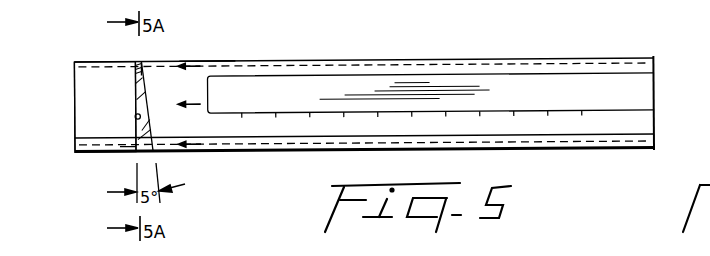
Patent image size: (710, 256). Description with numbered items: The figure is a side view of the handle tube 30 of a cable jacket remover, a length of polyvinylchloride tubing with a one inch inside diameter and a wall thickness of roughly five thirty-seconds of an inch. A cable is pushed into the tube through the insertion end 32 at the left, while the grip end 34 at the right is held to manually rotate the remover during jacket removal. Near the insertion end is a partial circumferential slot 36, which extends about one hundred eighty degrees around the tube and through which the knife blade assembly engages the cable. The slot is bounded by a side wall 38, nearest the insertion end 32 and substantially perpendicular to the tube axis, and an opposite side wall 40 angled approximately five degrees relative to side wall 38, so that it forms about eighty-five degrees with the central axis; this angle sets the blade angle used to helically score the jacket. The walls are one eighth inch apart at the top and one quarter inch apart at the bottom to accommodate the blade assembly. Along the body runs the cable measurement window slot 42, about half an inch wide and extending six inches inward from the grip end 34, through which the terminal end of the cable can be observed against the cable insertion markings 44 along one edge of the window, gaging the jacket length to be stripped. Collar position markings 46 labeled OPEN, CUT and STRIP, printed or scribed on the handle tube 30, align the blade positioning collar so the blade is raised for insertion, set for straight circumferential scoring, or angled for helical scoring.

The handle tube 30 is at (345, 61).
The insertion end 32 is at (75, 73).
The grip end 34 is at (655, 124).
The partial circumferential slot 36 is at (149, 81).
The side wall 38 is at (135, 118).
The opposite side wall 40 is at (120, 151).
The cable measurement window slot 42 is at (457, 81).
The cable insertion markings 44 is at (418, 154).
The collar position markings 46 is at (214, 34).